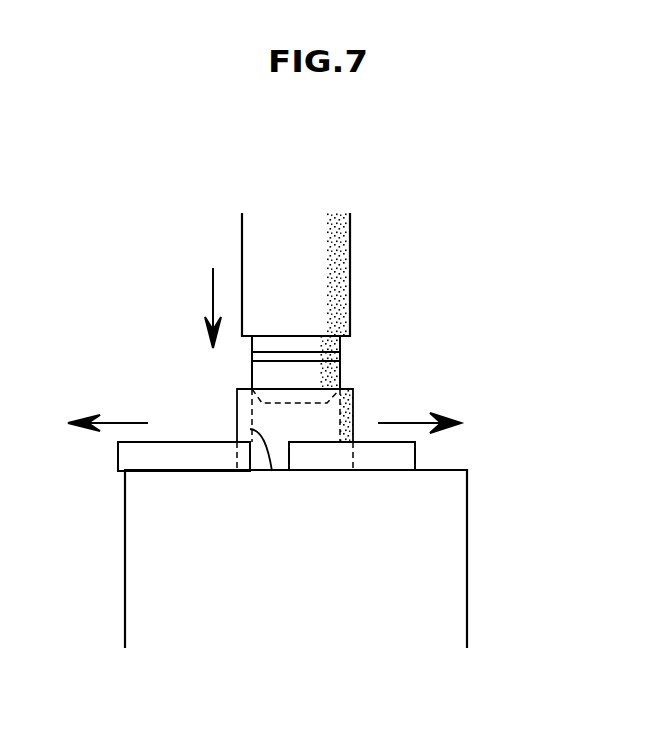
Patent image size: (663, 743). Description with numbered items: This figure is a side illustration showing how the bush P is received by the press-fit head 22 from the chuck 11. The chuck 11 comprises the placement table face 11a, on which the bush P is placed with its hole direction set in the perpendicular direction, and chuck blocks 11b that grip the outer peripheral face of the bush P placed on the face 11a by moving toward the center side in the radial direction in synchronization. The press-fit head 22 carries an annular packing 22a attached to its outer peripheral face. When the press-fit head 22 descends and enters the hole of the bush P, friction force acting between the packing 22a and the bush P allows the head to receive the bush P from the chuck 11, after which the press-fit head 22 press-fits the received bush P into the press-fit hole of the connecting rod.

The chuck 11 is at (467, 543).
The placement table face 11a is at (250, 429).
The chuck block 11b is at (118, 457).
The press-fit head 22 is at (352, 365).
The annular packing 22a is at (252, 357).
The bush P is at (354, 398).